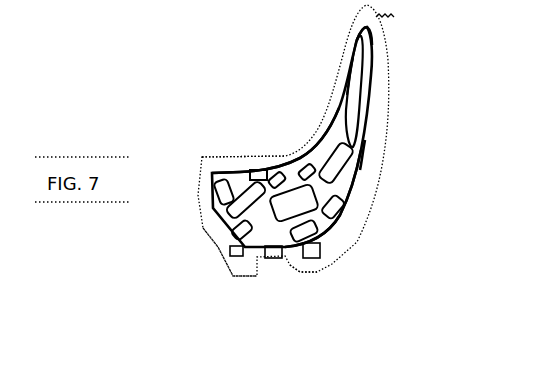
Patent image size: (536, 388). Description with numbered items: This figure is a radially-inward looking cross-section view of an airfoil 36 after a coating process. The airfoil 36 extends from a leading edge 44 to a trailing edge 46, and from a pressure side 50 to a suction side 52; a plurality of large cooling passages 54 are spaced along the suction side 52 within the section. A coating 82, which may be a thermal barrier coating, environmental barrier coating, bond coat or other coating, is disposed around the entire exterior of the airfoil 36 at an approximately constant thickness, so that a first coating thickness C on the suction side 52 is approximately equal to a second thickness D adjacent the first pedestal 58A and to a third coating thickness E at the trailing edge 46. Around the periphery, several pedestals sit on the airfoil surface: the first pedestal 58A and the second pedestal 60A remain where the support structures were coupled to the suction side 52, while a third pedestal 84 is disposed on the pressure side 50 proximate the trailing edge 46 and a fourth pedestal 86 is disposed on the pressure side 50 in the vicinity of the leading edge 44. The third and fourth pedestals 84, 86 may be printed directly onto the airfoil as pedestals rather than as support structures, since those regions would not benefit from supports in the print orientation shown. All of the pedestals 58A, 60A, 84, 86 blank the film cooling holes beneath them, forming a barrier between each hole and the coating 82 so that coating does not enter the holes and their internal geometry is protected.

The airfoil 36 is at (274, 72).
The leading edge 44 is at (212, 170).
The trailing edge 46 is at (368, 28).
The pressure side 50 is at (311, 153).
The suction side 52 is at (353, 210).
The large cooling passages 54 is at (259, 263).
The first pedestal 58A is at (320, 252).
The second pedestal 60A is at (230, 267).
The coating 82 is at (383, 118).
The third pedestal 84 is at (353, 58).
The fourth pedestal 86 is at (252, 171).
The first coating thickness C is at (365, 160).
The second coating thickness D is at (300, 272).
The third coating thickness E is at (392, 22).